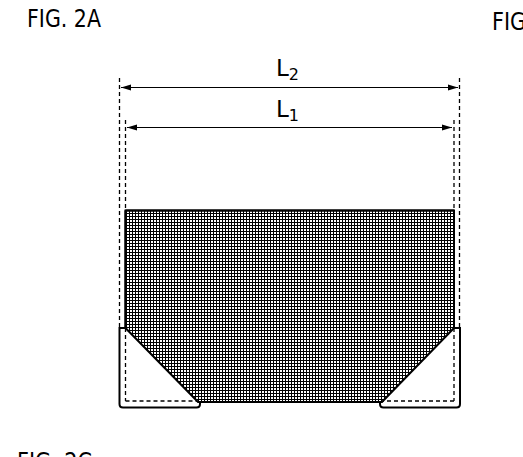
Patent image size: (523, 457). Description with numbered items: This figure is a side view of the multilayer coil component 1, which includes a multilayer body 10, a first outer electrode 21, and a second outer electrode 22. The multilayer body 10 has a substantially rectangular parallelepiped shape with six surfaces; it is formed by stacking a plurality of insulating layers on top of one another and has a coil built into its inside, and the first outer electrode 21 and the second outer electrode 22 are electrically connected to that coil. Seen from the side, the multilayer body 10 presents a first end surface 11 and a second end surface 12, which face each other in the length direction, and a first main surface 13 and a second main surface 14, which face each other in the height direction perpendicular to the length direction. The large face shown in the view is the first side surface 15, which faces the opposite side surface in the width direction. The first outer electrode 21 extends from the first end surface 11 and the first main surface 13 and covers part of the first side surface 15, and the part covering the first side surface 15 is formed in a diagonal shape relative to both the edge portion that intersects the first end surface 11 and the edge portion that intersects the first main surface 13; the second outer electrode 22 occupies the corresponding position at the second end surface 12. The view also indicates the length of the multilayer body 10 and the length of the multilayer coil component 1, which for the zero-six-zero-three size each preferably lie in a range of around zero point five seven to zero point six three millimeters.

The multilayer coil component 1 is at (114, 191).
The multilayer body 10 is at (292, 208).
The first end surface 11 is at (125, 262).
The second end surface 12 is at (455, 262).
The first main surface 13 is at (290, 402).
The second main surface 14 is at (244, 210).
The first side surface 15 is at (372, 237).
The first outer electrode 21 is at (133, 372).
The second outer electrode 22 is at (446, 372).